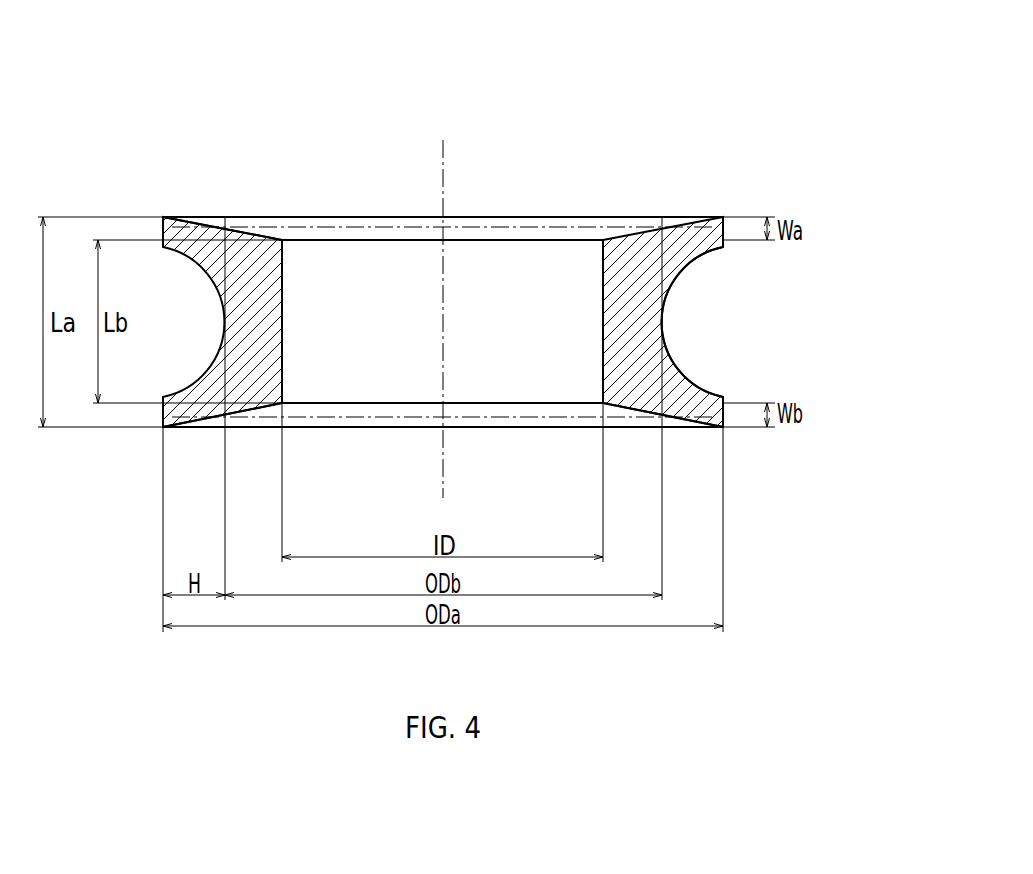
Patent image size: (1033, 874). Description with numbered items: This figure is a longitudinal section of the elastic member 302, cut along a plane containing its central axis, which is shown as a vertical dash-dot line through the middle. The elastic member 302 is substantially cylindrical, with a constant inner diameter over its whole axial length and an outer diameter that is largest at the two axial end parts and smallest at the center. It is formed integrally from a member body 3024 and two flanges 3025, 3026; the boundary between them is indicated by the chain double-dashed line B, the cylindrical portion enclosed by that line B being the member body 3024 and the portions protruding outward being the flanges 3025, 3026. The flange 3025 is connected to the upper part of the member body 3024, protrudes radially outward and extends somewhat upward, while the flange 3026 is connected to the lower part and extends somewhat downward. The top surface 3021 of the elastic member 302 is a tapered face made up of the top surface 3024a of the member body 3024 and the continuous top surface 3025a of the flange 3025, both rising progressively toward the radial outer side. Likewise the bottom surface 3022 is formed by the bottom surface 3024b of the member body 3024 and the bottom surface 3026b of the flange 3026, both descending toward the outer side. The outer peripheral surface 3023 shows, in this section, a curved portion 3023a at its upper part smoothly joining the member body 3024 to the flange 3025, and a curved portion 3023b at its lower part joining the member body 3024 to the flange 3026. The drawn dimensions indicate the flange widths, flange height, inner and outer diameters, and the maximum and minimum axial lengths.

The elastic member 302 is at (646, 53).
The top surface 3021 is at (655, 170).
The bottom surface 3022 is at (425, 475).
The outer peripheral surface 3023 is at (795, 130).
The curved portion 3023a is at (675, 286).
The curved portion 3023b is at (683, 372).
The member body 3024 is at (264, 273).
The top surface of the member body 3024a is at (545, 228).
The bottom surface of the member body 3024b is at (312, 428).
The flange 3025 is at (173, 217).
The top surface of the flange 3025a is at (613, 228).
The flange 3026 is at (163, 427).
The bottom surface of the flange 3026b is at (386, 428).
The chain double-dashed line B is at (252, 217).